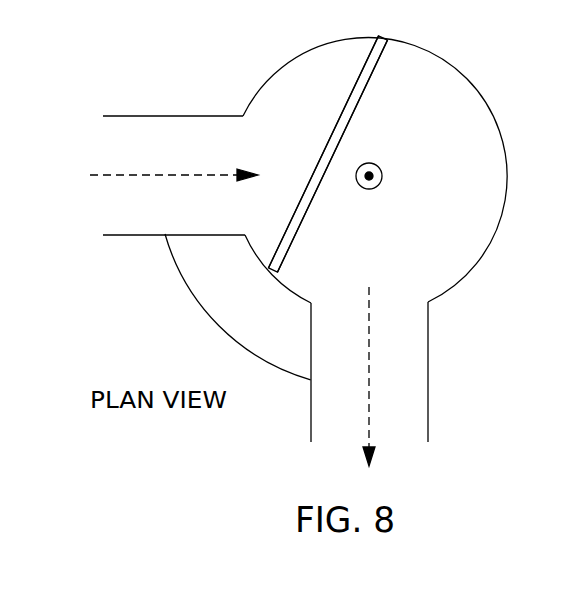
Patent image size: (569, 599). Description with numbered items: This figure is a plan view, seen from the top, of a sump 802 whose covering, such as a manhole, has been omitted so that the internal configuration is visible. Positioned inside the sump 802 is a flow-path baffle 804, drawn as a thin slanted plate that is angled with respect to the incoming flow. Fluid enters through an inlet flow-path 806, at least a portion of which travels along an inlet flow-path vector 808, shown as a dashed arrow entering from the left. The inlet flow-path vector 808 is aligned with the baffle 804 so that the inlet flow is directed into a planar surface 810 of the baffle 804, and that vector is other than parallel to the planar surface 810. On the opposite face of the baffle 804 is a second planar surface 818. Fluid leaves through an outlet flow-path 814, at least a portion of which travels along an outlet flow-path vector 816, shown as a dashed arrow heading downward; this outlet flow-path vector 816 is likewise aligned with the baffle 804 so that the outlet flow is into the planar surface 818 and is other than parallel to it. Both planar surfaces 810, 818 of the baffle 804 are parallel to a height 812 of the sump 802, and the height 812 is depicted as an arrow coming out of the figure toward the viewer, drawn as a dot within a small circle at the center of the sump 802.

The sump 802 is at (468, 78).
The flow-path baffle 804 is at (344, 133).
The inlet flow-path 806 is at (160, 116).
The inlet flow-path vector 808 is at (205, 175).
The planar surface 810 is at (351, 95).
The height 812 is at (382, 174).
The outlet flow-path 814 is at (428, 323).
The outlet flow-path vector 816 is at (369, 372).
The planar surface 818 is at (368, 252).